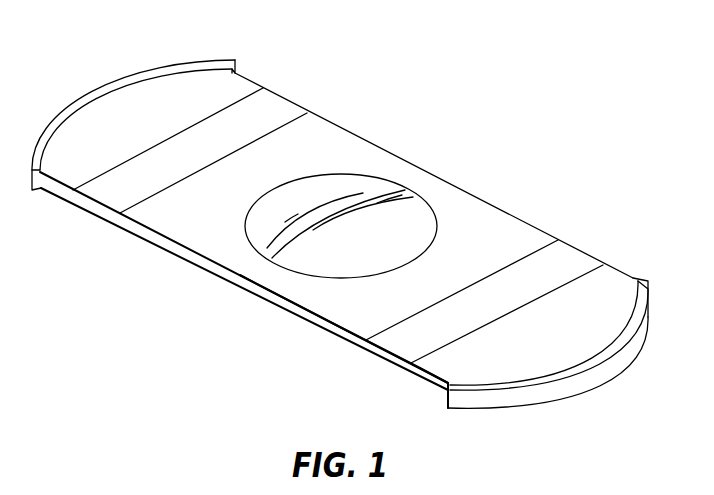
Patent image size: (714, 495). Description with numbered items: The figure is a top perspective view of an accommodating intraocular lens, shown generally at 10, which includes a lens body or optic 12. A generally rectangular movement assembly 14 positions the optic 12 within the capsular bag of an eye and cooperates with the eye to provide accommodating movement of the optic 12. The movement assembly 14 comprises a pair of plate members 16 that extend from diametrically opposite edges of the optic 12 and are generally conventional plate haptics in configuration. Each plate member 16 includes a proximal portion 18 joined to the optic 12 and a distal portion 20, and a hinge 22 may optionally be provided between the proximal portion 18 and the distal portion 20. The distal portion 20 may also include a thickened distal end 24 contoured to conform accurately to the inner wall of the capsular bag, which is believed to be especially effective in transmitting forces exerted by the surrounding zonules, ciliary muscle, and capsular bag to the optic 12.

The accommodating IOL 10 is at (130, 277).
The optic 12 is at (363, 184).
The movement assembly 14 is at (340, 108).
The plate members 16 is at (522, 245).
The proximal portion 18 is at (316, 297).
The distal portion 20 is at (453, 368).
The hinge 22 is at (395, 348).
The thickened distal end 24 is at (597, 374).